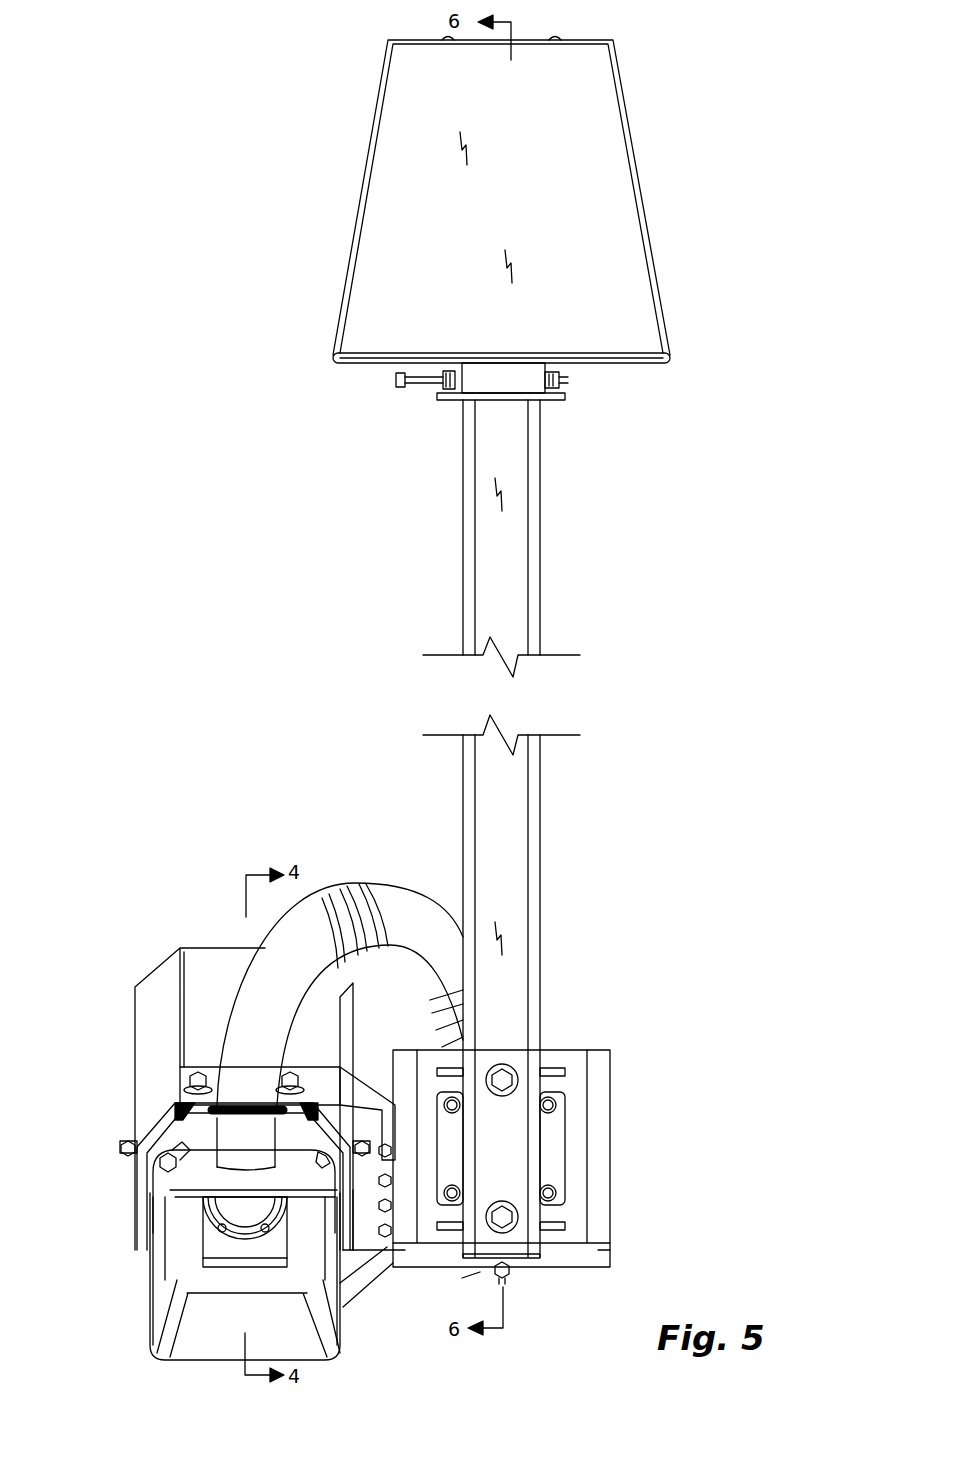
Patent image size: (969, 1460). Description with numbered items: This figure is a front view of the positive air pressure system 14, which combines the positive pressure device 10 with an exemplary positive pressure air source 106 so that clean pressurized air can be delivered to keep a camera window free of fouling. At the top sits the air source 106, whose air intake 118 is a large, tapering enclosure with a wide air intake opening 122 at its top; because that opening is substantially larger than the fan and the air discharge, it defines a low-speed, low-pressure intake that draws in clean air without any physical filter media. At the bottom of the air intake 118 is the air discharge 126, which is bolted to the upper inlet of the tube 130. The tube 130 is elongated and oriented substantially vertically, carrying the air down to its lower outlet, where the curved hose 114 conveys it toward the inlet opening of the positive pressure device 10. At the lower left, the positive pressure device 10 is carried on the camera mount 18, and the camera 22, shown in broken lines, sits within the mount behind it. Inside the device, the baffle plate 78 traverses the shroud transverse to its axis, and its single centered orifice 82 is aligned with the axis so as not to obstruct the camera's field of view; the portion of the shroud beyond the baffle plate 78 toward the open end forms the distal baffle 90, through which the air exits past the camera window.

The positive pressure device 10 is at (210, 1245).
The positive air pressure system 14 is at (348, 752).
The camera mount 18 is at (365, 1100).
The camera 22 is at (200, 1002).
The baffle plate 78 is at (200, 1273).
The orifice 82 is at (270, 1265).
The distal baffle 90 is at (210, 1335).
The positive pressure air source 106 is at (455, 249).
The hose 114 is at (392, 900).
The air intake 118 is at (375, 150).
The air intake opening 122 is at (618, 365).
The air discharge 126 is at (462, 400).
The tube 130 is at (533, 515).